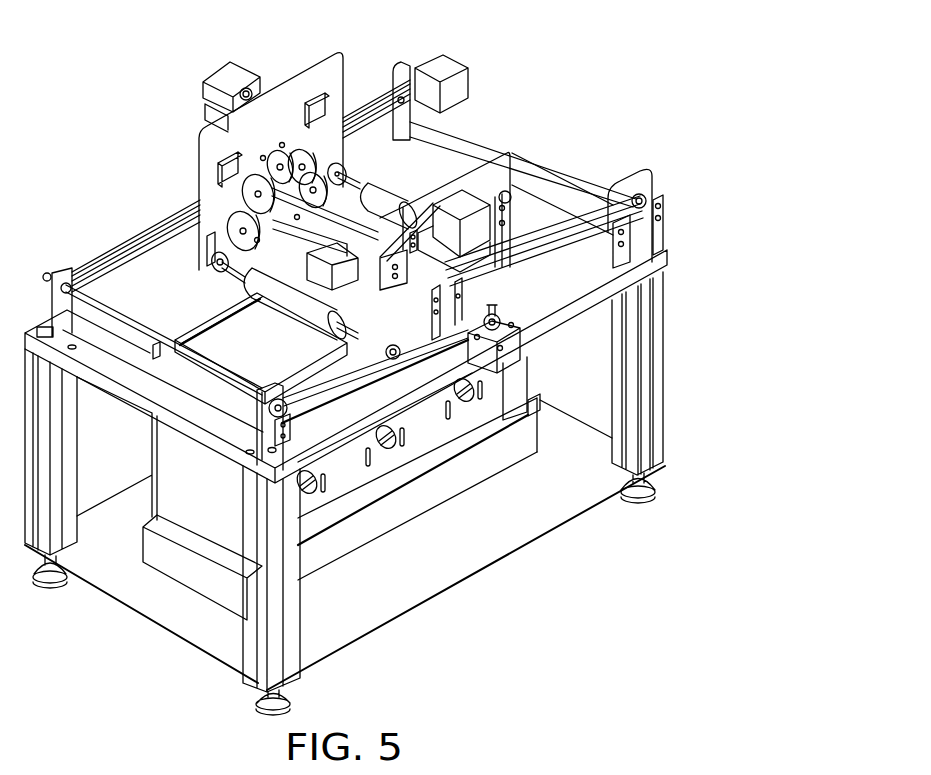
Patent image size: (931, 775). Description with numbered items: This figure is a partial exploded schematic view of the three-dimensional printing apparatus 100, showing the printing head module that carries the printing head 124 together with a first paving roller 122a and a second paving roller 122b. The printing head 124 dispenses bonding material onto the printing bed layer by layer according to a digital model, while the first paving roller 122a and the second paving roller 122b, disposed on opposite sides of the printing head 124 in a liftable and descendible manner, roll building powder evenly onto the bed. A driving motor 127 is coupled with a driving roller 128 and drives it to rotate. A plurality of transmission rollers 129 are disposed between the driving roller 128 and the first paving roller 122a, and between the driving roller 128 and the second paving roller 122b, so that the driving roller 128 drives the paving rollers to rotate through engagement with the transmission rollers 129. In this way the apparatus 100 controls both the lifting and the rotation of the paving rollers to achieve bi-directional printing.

The 3-D printing apparatus 100 is at (628, 708).
The first paving roller 122a is at (355, 180).
The second paving roller 122b is at (190, 262).
The printing head 124 is at (317, 287).
The driving motor 127 is at (230, 72).
The driving roller 128 is at (277, 163).
The transmission rollers 129 is at (253, 200).